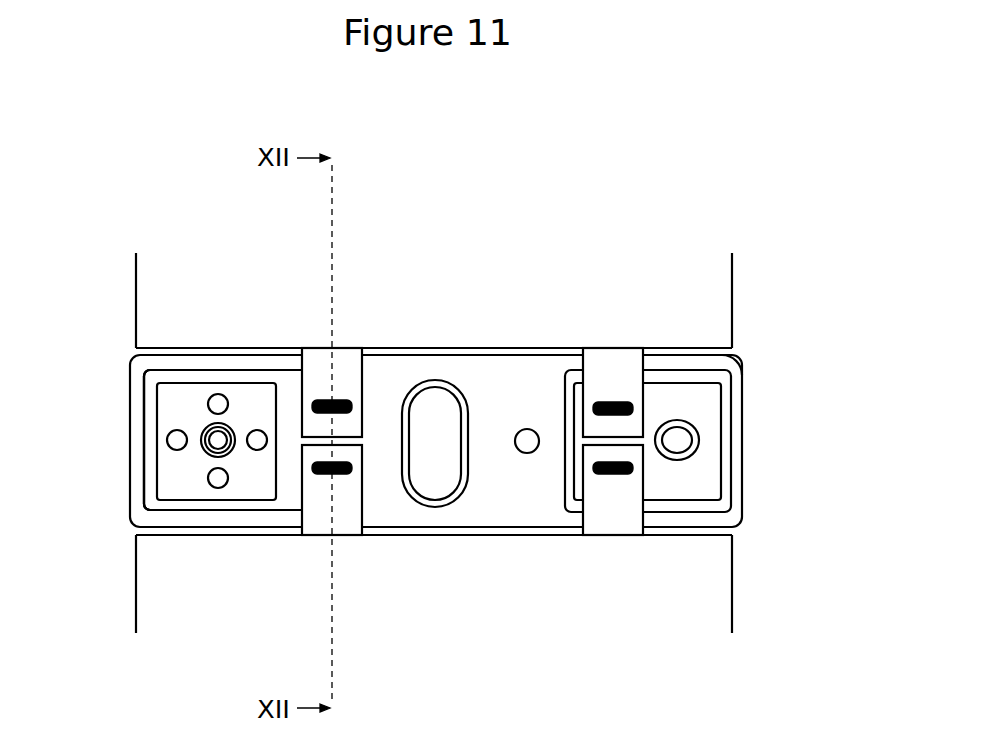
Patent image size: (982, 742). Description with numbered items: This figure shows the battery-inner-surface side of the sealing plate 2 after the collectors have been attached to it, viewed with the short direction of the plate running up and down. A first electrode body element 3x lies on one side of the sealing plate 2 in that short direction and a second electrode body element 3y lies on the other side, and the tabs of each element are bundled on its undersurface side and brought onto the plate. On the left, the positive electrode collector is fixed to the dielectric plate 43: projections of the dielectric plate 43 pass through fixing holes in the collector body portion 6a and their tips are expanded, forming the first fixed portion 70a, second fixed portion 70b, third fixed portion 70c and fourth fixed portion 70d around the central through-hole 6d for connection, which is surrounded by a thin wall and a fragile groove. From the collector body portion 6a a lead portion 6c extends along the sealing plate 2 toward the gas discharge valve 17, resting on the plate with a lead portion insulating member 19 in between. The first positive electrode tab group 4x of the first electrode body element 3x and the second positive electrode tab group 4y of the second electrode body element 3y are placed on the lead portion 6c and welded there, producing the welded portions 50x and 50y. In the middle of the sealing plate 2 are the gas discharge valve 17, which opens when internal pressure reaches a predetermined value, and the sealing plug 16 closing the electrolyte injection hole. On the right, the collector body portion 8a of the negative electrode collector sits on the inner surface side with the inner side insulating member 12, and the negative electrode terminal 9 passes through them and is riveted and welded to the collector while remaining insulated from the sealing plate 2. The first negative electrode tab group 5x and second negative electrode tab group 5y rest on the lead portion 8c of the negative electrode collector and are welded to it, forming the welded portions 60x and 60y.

The sealing plate 2 is at (490, 427).
The first electrode body element 3x is at (222, 309).
The second electrode body element 3y is at (227, 617).
The first positive electrode tab group 4x is at (318, 367).
The second positive electrode tab group 4y is at (340, 478).
The first negative electrode tab group 5x is at (597, 382).
The second negative electrode tab group 5y is at (601, 498).
The collector body portion 6a is at (175, 424).
The lead portion 6c is at (289, 478).
The through-hole for connection 6d is at (201, 449).
The collector body portion 8a is at (692, 401).
The lead portion 8c is at (652, 380).
The negative electrode terminal 9 is at (695, 453).
The inner side insulating member 12 is at (736, 360).
The sealing plug 16 is at (524, 430).
The gas discharge valve 17 is at (441, 438).
The lead portion insulating member 19 is at (287, 378).
The dielectric plate 43 is at (197, 506).
The welded portion 50x is at (342, 400).
The welded portion 50y is at (348, 475).
The welded portion 60x is at (615, 400).
The welded portion 60y is at (622, 473).
The first fixed portion 70a is at (217, 394).
The second fixed portion 70b is at (208, 482).
The third fixed portion 70c is at (167, 440).
The fourth fixed portion 70d is at (257, 430).